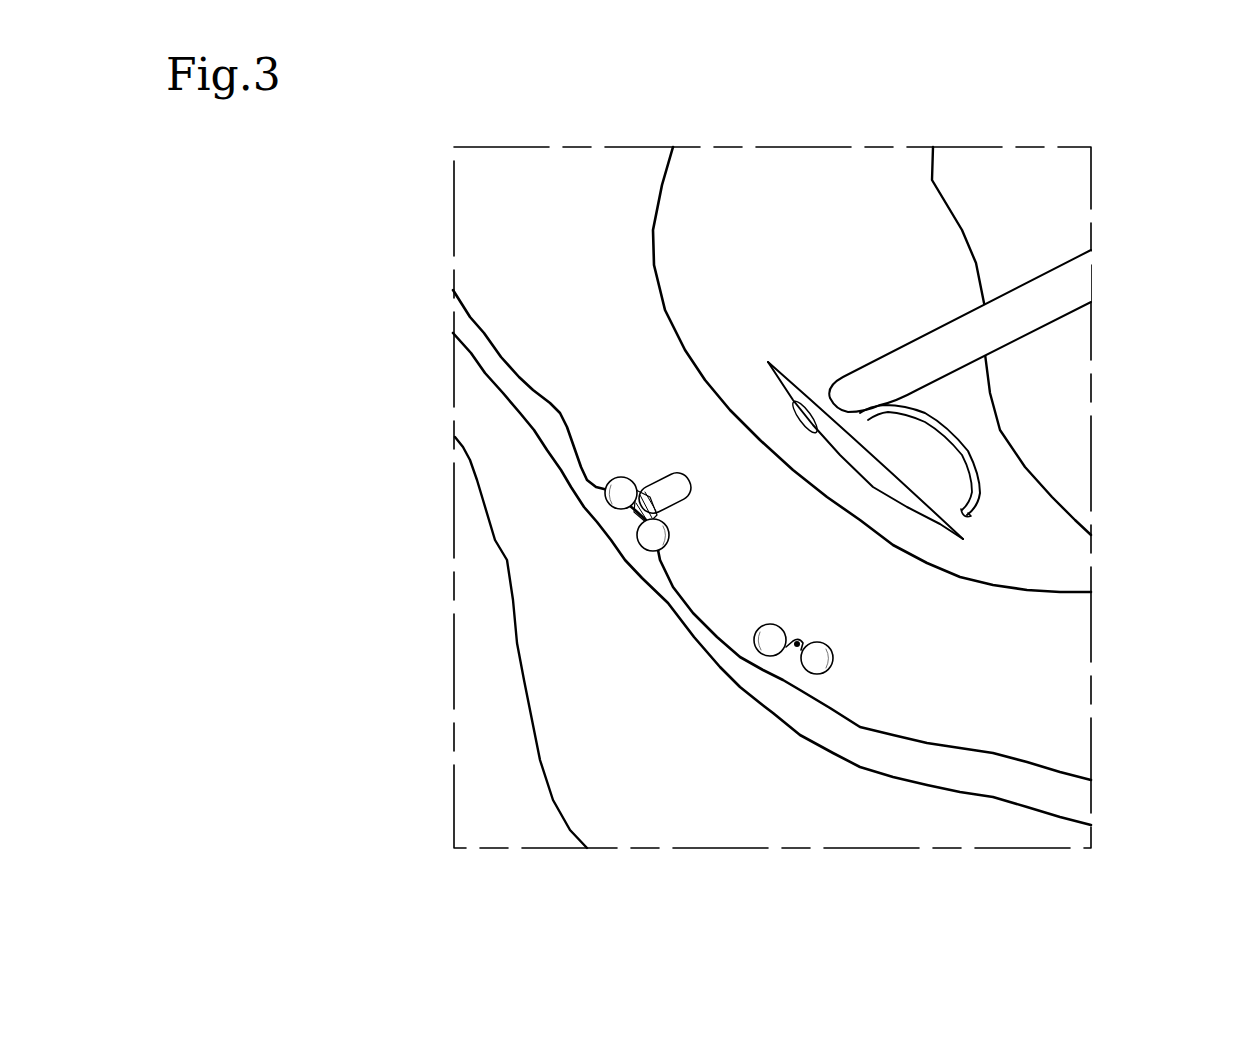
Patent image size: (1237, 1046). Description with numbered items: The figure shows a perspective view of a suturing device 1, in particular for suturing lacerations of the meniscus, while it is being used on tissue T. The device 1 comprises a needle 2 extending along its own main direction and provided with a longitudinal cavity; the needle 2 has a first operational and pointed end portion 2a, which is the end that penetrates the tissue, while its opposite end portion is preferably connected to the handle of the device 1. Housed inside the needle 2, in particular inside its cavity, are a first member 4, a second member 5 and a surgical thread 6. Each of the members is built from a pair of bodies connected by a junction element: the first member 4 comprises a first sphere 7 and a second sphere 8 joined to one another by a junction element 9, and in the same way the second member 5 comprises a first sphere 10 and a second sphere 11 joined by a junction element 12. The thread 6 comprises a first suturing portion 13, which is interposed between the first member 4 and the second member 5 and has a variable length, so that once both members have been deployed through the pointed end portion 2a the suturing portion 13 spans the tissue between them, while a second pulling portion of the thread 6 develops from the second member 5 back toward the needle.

The suturing device 1 is at (1026, 238).
The needle 2 is at (1050, 318).
The first operational and pointed end portion 2a is at (678, 503).
The first member 4 is at (812, 675).
The second member 5 is at (530, 521).
The surgical thread 6 is at (1000, 487).
The first sphere 7 is at (818, 659).
The second sphere 8 is at (770, 641).
The junction element 9 is at (797, 648).
The first sphere 10 is at (651, 538).
The second sphere 11 is at (621, 488).
The junction element 12 is at (640, 512).
The first suturing portion 13 is at (978, 447).
The tendon T is at (902, 497).